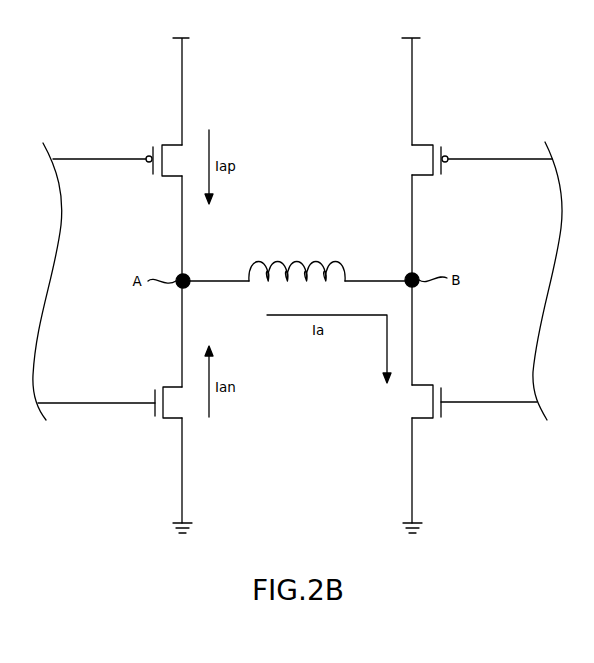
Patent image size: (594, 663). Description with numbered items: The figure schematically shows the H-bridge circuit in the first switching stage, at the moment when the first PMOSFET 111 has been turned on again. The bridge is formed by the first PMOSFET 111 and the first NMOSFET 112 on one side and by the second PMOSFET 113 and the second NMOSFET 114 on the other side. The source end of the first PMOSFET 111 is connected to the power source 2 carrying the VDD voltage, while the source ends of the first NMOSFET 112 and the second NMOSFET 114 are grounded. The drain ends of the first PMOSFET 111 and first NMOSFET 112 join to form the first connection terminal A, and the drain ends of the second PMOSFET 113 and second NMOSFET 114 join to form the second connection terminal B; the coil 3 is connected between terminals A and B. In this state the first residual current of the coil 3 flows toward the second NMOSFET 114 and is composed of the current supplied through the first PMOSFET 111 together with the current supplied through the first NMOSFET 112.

The power source 2 is at (189, 39).
The coil 3 is at (296, 262).
The first PMOSFET 111 is at (175, 178).
The first NMOSFET 112 is at (177, 421).
The second PMOSFET 113 is at (420, 178).
The second NMOSFET 114 is at (420, 421).